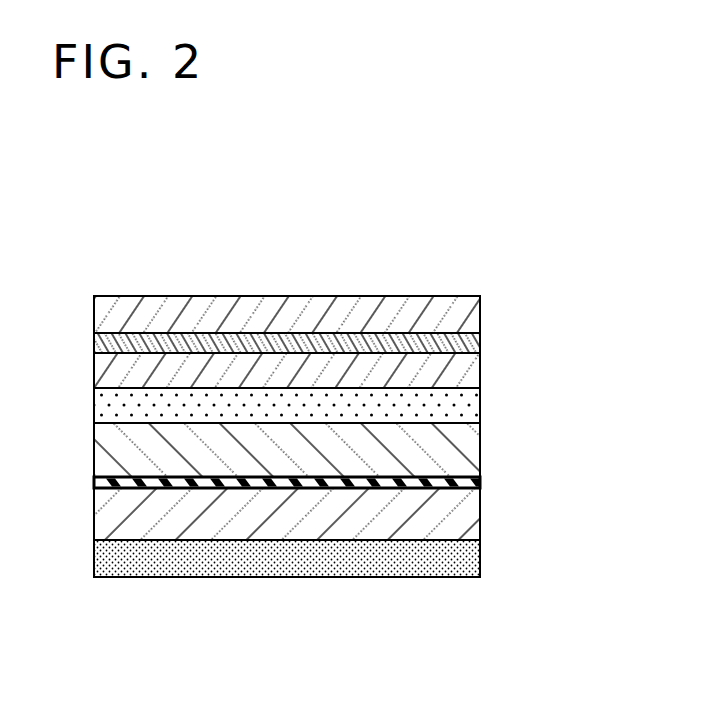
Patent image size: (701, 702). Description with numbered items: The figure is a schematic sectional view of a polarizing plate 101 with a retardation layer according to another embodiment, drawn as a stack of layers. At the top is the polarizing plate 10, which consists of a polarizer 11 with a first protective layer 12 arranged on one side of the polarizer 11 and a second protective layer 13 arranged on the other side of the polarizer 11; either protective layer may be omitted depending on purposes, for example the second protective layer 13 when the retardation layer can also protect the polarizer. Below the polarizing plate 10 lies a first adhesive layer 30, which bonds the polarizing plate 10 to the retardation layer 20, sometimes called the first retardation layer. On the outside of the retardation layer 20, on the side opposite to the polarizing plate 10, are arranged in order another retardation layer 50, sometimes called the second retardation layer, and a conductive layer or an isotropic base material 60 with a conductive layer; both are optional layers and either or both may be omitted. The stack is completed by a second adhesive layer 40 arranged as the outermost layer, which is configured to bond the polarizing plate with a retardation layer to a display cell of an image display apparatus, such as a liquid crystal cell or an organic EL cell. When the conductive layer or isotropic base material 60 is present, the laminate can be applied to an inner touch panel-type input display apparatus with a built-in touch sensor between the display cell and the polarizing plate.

The polarizing plate with a retardation layer 101 is at (603, 194).
The polarizing plate 10 is at (540, 295).
The polarizer 11 is at (480, 340).
The first protective layer 12 is at (480, 313).
The second protective layer 13 is at (480, 370).
The first adhesive layer 30 is at (480, 402).
The retardation layer 20 is at (480, 445).
The other retardation layer 50 is at (480, 481).
The isotropic base material with a conductive layer 60 is at (480, 518).
The second adhesive layer 40 is at (480, 557).